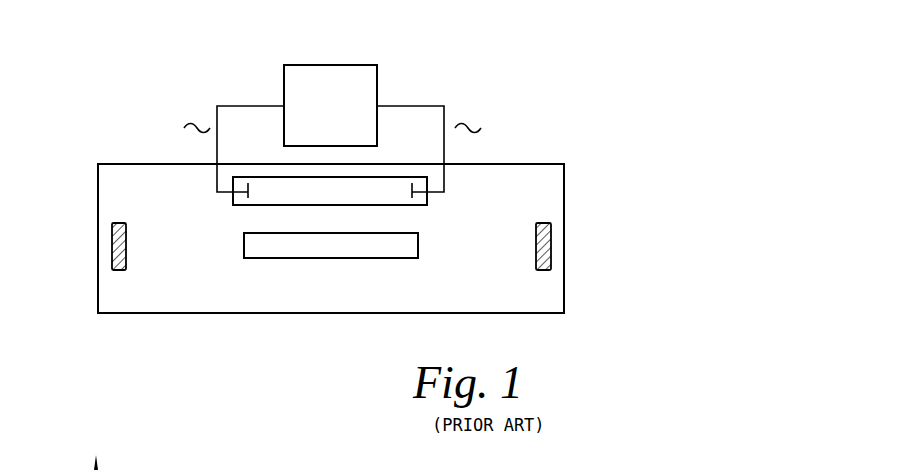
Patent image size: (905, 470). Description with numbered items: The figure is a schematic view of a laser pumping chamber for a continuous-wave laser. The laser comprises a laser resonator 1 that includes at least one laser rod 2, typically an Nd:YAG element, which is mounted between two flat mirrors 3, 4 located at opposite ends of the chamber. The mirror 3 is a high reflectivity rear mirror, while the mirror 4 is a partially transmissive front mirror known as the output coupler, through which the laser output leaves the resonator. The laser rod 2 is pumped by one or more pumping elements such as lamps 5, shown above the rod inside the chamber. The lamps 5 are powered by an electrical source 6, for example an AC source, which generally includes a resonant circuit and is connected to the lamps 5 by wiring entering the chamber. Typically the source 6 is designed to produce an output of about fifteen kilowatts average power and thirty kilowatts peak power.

The laser resonator 1 is at (177, 313).
The laser rod 2 is at (330, 258).
The high reflectivity rear mirror 3 is at (112, 250).
The partially transmissive front mirror 4 is at (551, 250).
The lamps 5 is at (427, 205).
The electrical source 6 is at (350, 65).